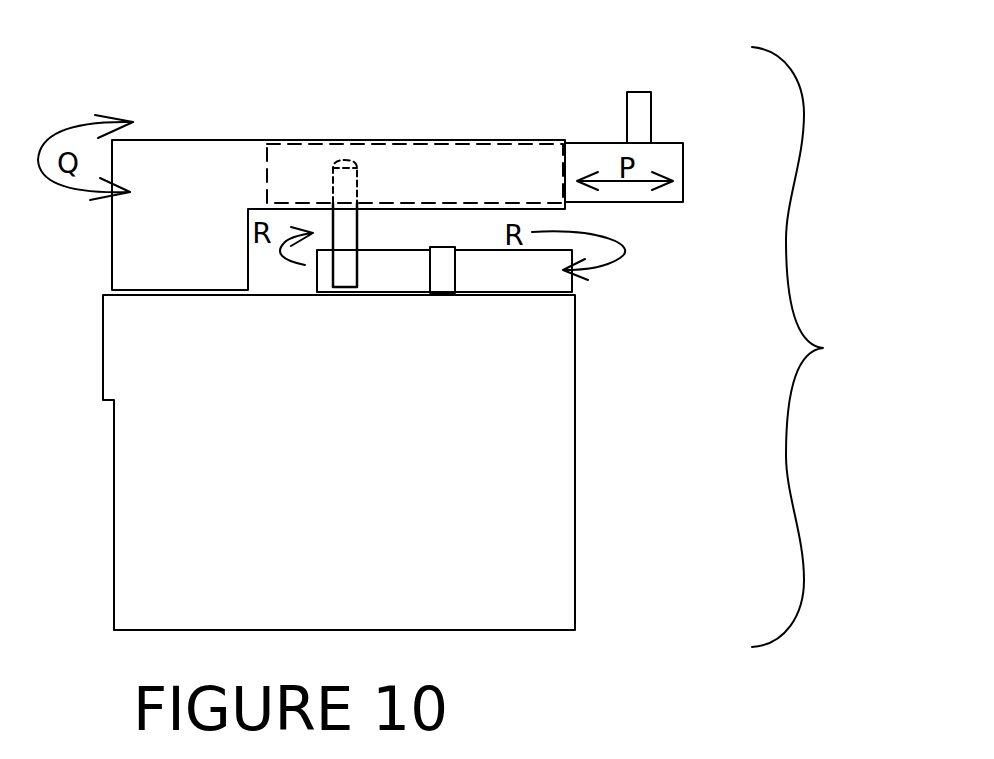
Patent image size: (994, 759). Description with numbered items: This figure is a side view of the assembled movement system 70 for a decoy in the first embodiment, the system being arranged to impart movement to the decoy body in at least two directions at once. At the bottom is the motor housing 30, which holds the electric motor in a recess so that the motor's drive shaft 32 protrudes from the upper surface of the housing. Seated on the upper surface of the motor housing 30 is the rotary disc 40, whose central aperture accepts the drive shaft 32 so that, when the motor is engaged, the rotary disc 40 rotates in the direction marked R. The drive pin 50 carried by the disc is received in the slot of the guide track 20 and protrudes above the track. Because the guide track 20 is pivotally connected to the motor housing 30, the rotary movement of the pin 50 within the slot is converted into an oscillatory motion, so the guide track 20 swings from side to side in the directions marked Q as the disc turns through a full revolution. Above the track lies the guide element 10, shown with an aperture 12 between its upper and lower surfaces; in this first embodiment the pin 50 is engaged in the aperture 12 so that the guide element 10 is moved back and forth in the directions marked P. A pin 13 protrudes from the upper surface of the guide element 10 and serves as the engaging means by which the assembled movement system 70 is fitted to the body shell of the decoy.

The guide element 10 is at (665, 147).
The aperture 12 is at (343, 152).
The pin 13 is at (637, 113).
The guide track 20 is at (170, 273).
The motor housing 30 is at (360, 489).
The drive shaft 32 is at (447, 283).
The rotary disc 40 is at (552, 280).
The drive pin 50 is at (343, 230).
The movement system 70 is at (814, 347).